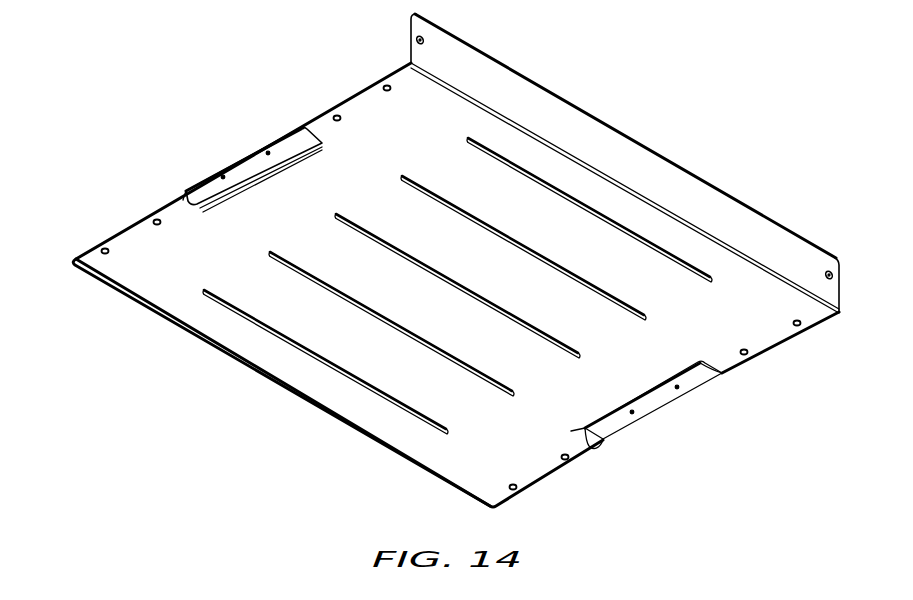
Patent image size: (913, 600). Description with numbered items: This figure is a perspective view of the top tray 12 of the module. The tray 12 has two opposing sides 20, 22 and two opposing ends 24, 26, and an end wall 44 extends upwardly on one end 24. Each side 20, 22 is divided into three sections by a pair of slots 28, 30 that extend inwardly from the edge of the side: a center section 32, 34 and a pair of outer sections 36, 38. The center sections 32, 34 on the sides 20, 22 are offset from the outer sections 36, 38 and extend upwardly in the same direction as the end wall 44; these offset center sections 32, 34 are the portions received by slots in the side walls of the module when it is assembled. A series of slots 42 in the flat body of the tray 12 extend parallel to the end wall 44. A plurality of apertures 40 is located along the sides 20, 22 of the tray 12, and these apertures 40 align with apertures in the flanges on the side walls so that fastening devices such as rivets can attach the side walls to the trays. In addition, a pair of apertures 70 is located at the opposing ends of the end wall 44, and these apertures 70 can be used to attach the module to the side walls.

The top tray 12 is at (684, 44).
The side 20 is at (692, 393).
The side 22 is at (258, 146).
The end 24 is at (577, 100).
The end 26 is at (240, 370).
The slot 28 is at (603, 441).
The slot 30 is at (302, 128).
The center section 32 is at (657, 397).
The center section 34 is at (233, 170).
The outer section 36 is at (542, 467).
The outer section 38 is at (360, 106).
The aperture 40 is at (103, 248).
The slot 42 is at (530, 253).
The end wall 44 is at (652, 173).
The aperture 70 is at (416, 38).